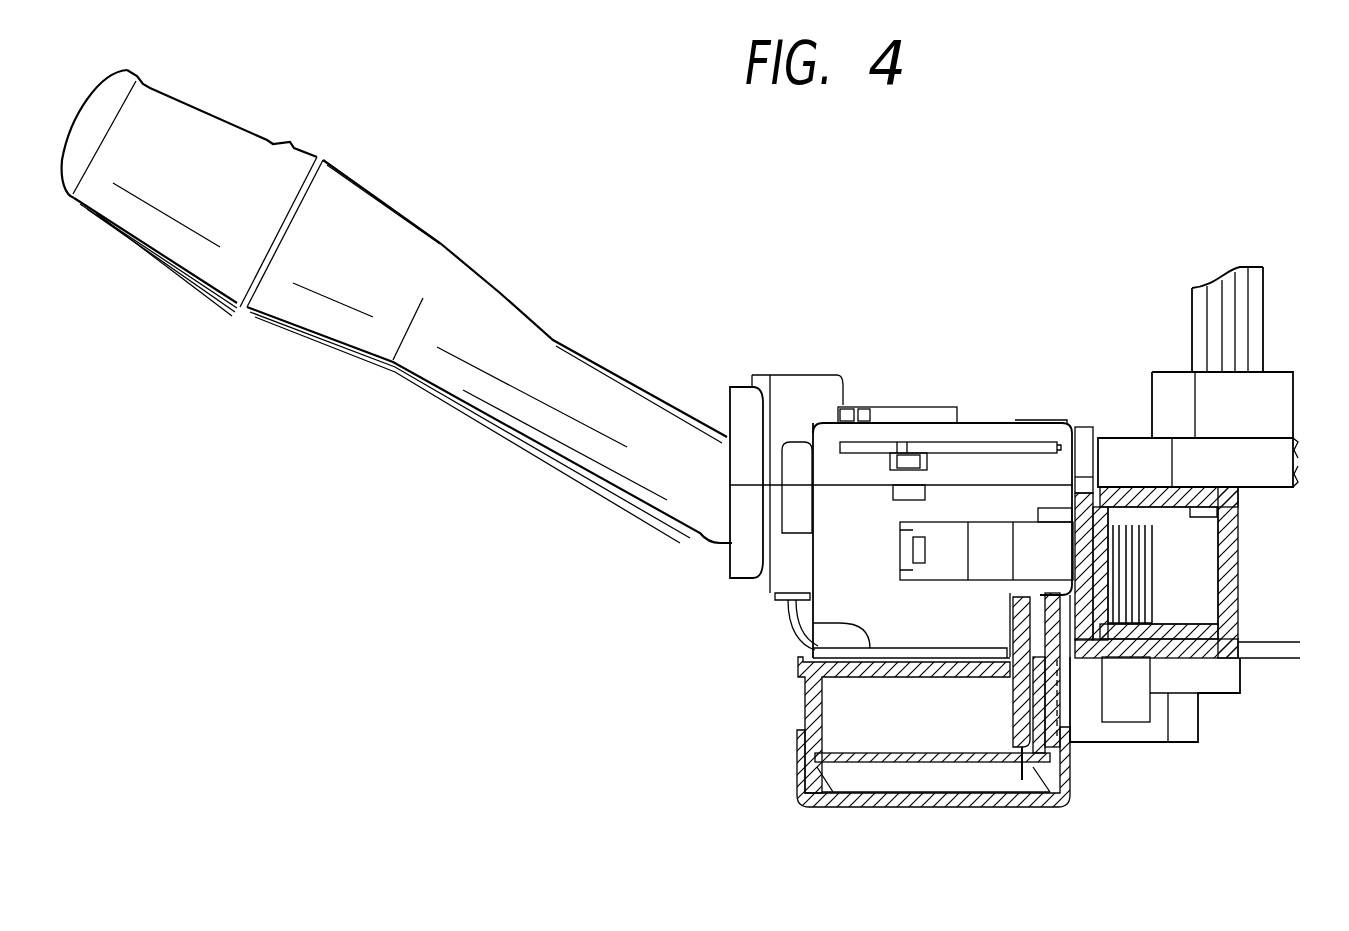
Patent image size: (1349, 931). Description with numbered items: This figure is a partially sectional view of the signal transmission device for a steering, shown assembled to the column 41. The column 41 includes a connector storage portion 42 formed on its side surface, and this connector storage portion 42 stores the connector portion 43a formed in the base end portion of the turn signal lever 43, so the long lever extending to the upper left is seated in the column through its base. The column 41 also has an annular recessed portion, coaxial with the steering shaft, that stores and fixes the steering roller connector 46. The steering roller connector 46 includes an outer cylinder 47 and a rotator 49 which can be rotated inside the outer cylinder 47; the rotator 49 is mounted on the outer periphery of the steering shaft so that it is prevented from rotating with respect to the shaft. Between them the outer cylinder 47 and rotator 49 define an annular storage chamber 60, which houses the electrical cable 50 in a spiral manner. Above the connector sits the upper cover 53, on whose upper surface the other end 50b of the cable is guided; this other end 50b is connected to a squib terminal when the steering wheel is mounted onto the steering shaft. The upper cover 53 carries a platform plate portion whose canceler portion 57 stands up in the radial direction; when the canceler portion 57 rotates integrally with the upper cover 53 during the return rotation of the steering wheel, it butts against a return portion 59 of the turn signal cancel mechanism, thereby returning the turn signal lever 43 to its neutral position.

The column 41 is at (1185, 755).
The connector storage portion 42 is at (813, 630).
The turn signal lever 43 is at (458, 244).
The connector portion 43a is at (827, 567).
The steering roller connector 46 is at (1270, 345).
The outer cylinder 47 is at (1100, 546).
The rotator 49 is at (1242, 575).
The electrical cable 50 is at (1122, 600).
The other end of the cable 50b is at (1265, 284).
The upper cover 53 is at (1192, 506).
The canceler portion 57 is at (1123, 443).
The return portion 59 is at (1083, 463).
The annular storage chamber 60 is at (1202, 563).